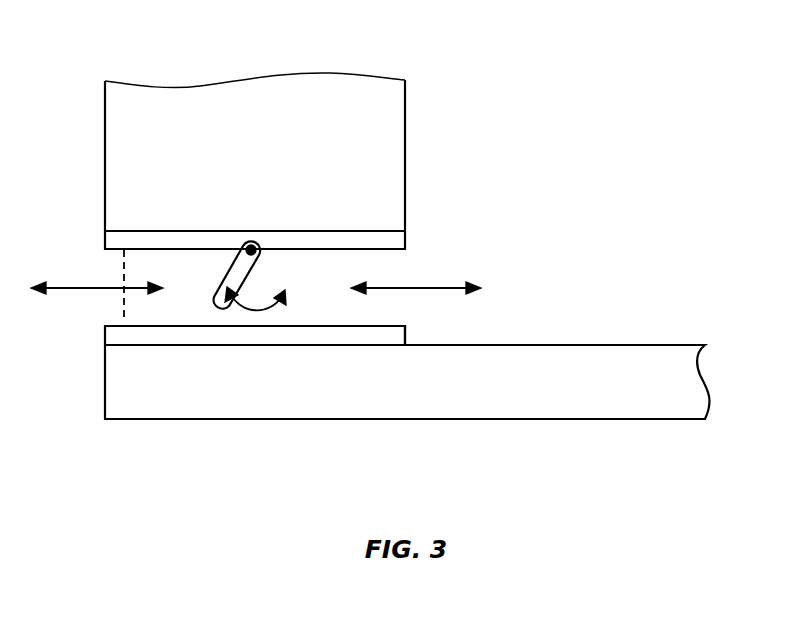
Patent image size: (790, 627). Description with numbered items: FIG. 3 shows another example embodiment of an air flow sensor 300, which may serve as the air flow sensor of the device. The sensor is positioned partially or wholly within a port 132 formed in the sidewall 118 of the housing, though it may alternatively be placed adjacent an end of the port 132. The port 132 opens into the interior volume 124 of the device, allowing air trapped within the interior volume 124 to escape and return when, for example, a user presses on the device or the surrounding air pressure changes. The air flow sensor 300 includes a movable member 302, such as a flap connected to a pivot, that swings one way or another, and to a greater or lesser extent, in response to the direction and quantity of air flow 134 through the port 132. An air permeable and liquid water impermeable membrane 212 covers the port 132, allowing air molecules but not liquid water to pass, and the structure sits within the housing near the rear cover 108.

The rear cover 108 is at (412, 420).
The sidewall 118 is at (257, 80).
The interior volume 124 is at (606, 193).
The port 132 is at (313, 297).
The air flow 134 is at (67, 290).
The membrane 212 is at (123, 308).
The air flow sensor 300 is at (171, 231).
The movable member 302 is at (215, 298).